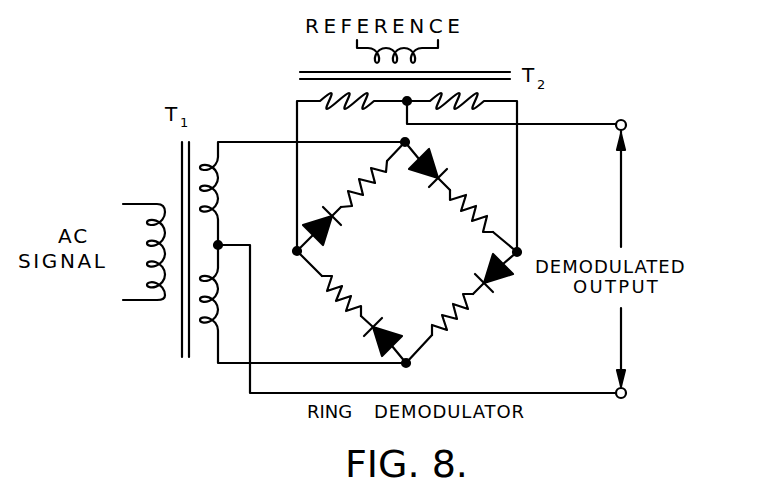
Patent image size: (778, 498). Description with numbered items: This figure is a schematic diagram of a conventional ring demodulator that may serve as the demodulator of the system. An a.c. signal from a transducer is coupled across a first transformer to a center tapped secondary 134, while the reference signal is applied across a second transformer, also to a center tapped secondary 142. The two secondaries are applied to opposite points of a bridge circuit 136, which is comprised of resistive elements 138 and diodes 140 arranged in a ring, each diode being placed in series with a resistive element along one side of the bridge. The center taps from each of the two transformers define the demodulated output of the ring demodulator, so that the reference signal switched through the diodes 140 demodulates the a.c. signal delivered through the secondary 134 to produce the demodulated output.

The center tapped secondary 134 is at (218, 188).
The ring demodulator bridge 136 is at (528, 162).
The resistive elements 138 is at (376, 189).
The diodes 140 is at (330, 237).
The center tapped secondary 142 is at (360, 108).